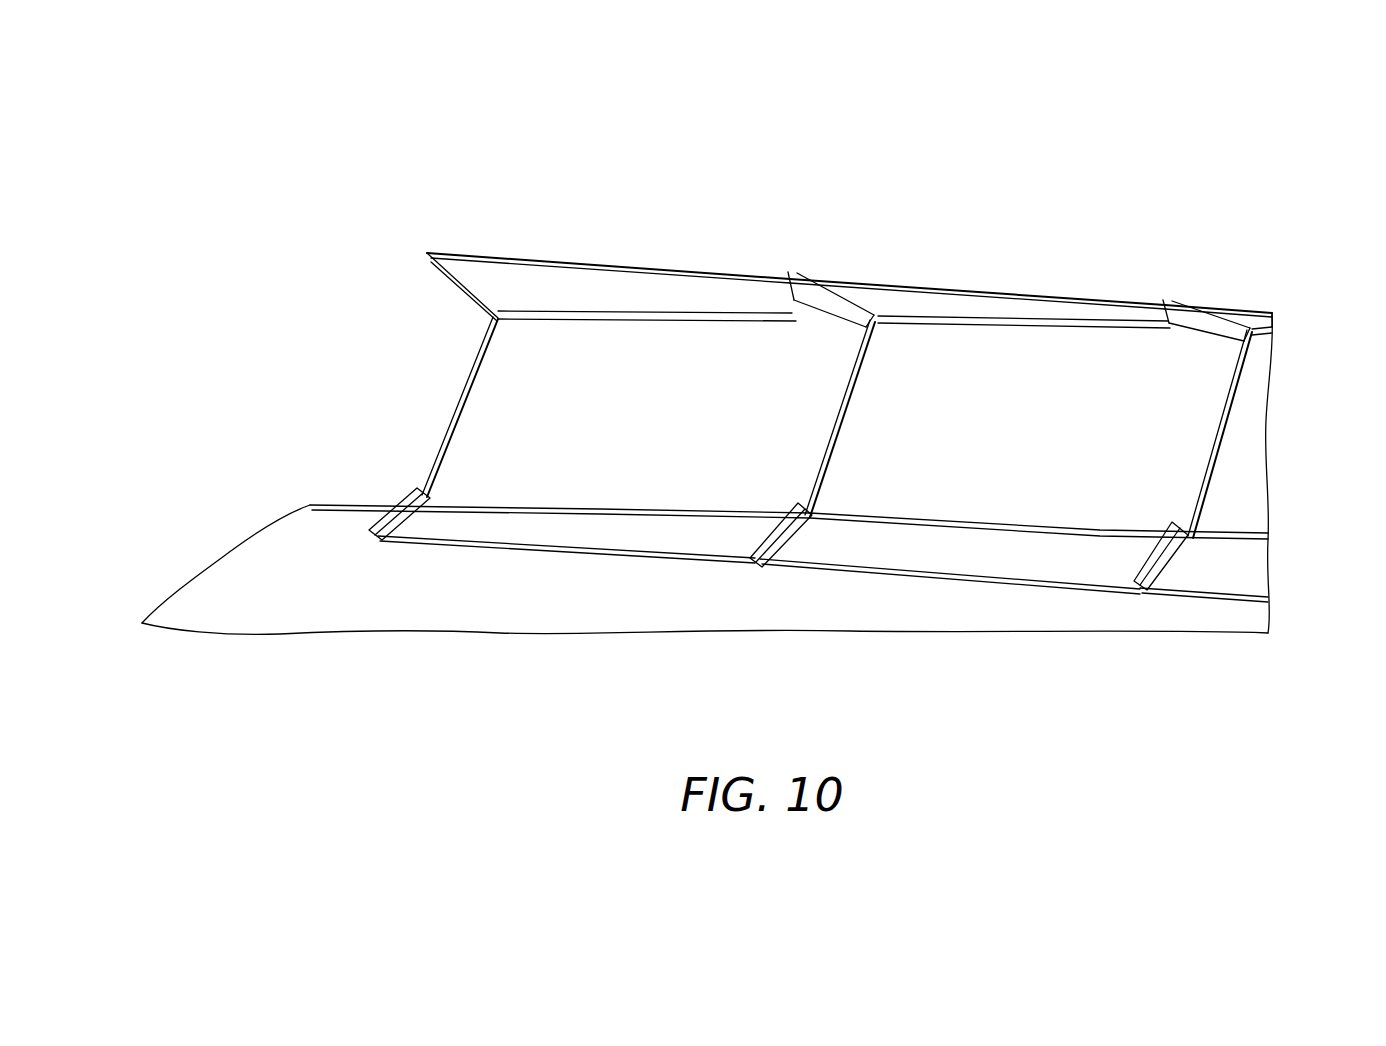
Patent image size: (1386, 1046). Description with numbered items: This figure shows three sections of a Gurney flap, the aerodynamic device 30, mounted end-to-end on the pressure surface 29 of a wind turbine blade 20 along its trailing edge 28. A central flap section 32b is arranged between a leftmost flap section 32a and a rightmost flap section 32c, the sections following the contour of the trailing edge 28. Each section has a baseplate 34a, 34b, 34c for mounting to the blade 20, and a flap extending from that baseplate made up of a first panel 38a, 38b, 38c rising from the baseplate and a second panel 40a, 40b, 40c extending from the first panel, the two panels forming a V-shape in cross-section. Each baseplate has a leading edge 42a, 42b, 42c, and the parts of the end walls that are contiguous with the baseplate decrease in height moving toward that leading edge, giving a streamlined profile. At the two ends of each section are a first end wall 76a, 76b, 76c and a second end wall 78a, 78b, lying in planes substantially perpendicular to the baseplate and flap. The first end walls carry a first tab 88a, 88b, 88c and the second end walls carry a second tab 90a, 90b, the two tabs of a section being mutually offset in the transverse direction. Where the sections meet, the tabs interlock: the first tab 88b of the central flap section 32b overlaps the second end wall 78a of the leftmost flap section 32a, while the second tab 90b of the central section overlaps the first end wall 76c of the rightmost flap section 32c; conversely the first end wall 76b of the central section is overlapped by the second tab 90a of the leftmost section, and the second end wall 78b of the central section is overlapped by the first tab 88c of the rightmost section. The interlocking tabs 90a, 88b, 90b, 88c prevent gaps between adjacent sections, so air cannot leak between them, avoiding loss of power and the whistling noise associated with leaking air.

The wind turbine blade 20 is at (707, 518).
The trailing edge 28 is at (333, 502).
The pressure surface 29 is at (262, 552).
The aerodynamic device 30 is at (738, 166).
The leftmost flap section 32a is at (645, 215).
The central flap section 32b is at (977, 236).
The rightmost flap section 32c is at (1244, 254).
The baseplate 34a is at (548, 528).
The baseplate 34b is at (952, 550).
The baseplate 34c is at (1242, 556).
The first panel 38a is at (650, 407).
The first panel 38b is at (1035, 418).
The first panel 38c is at (1262, 460).
The second panel 40a is at (505, 274).
The second panel 40b is at (893, 292).
The second panel 40c is at (1268, 312).
The leading edge 42a is at (597, 560).
The leading edge 42b is at (880, 572).
The leading edge 42c is at (1212, 597).
The first end wall 76a is at (463, 393).
The first end wall 76b is at (862, 368).
The first end wall 76c is at (1238, 382).
The second end wall 78a is at (791, 275).
The second end wall 78b is at (1165, 302).
The first tab 88a is at (420, 490).
The first tab 88b is at (798, 508).
The first tab 88c is at (1172, 530).
The second tab 90a is at (822, 442).
The second tab 90b is at (1205, 450).